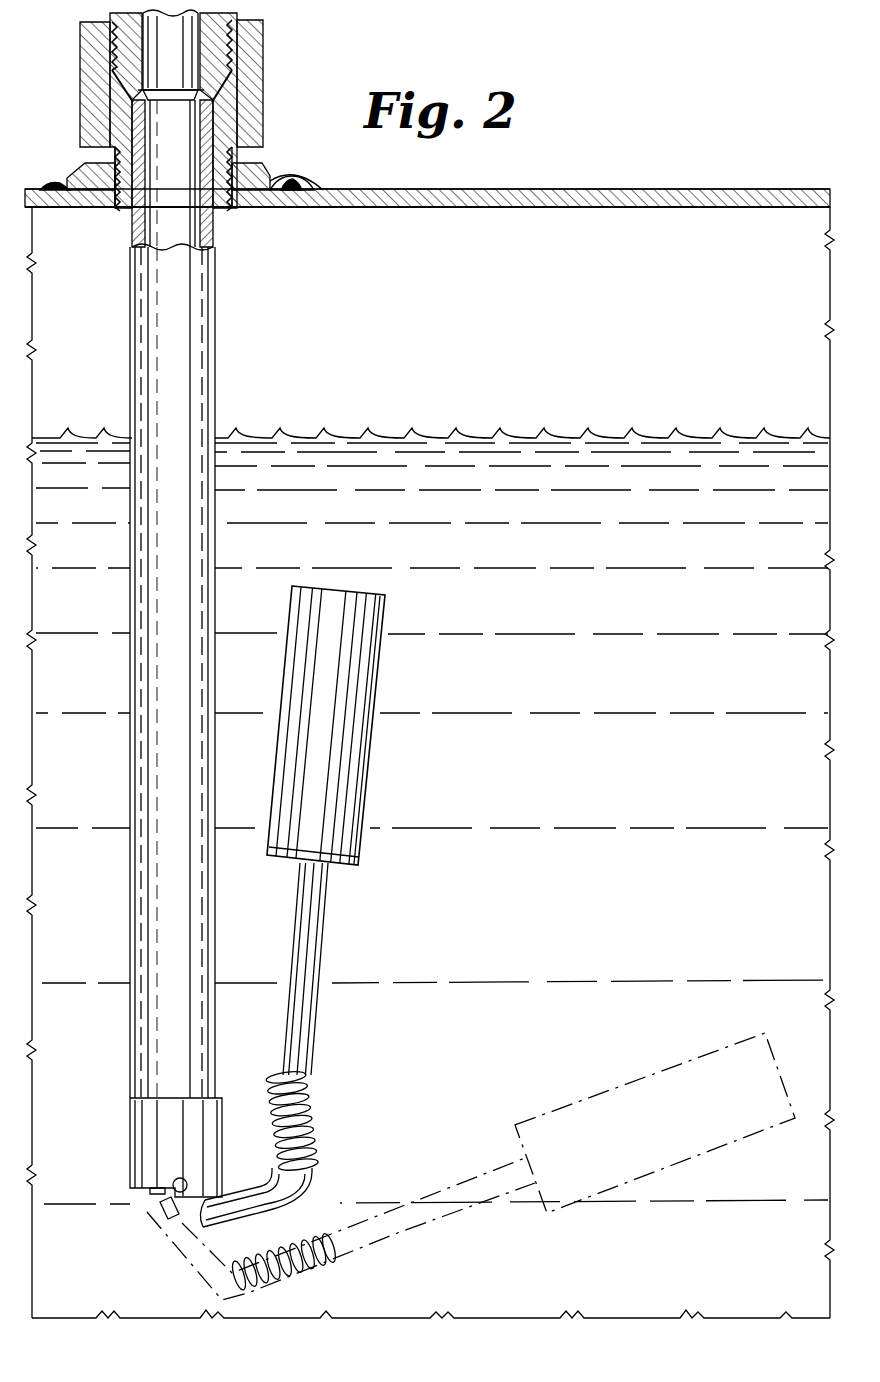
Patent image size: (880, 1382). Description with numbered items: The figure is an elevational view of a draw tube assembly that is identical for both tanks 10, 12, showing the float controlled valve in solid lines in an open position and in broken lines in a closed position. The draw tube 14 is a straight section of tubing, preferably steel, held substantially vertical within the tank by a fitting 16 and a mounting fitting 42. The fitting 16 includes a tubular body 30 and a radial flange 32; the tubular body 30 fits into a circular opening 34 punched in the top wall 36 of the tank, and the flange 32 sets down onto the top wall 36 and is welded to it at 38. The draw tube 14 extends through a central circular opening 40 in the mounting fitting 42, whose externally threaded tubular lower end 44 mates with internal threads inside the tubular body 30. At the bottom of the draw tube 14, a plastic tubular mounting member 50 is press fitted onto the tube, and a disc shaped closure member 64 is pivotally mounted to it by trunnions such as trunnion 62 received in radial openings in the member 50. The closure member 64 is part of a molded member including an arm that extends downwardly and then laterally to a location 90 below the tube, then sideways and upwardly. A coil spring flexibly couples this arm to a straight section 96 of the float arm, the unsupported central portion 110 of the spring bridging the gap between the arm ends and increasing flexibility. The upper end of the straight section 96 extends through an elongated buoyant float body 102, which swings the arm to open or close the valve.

The tank 10 is at (588, 223).
The tank 12 is at (427, 158).
The draw tube 14 is at (188, 373).
The fitting 16 is at (255, 167).
The tubular body 30 is at (121, 212).
The radial flange 32 is at (80, 177).
The circular opening 34 is at (234, 212).
The top wall 36 is at (697, 196).
The weld 38 is at (306, 192).
The central circular opening 40 is at (147, 122).
The mounting fitting 42 is at (253, 103).
The tubular lower end 44 is at (143, 227).
The tubular mounting member 50 is at (137, 1120).
The trunnion 62 is at (177, 1180).
The closure member 64 is at (157, 1208).
The location 90 is at (290, 1203).
The straight section 96 is at (313, 930).
The buoyant float body 102 is at (357, 780).
The central portion of spring 110 is at (309, 1133).